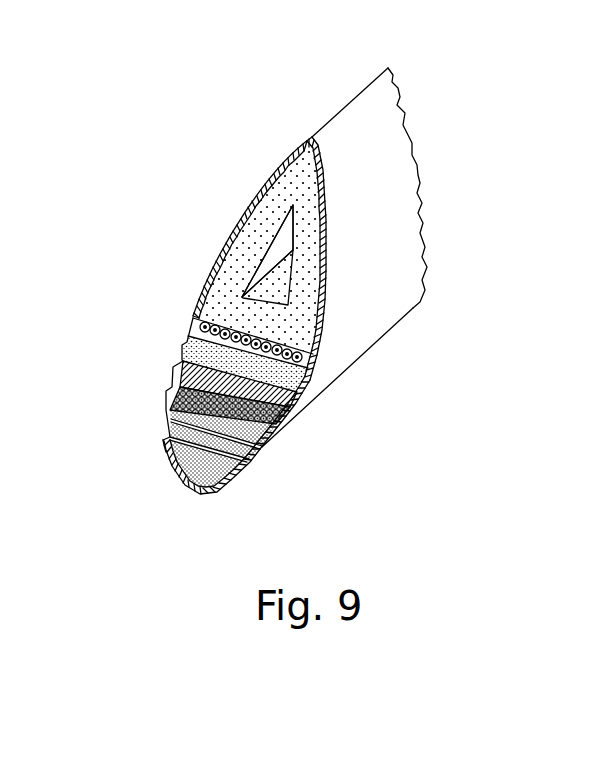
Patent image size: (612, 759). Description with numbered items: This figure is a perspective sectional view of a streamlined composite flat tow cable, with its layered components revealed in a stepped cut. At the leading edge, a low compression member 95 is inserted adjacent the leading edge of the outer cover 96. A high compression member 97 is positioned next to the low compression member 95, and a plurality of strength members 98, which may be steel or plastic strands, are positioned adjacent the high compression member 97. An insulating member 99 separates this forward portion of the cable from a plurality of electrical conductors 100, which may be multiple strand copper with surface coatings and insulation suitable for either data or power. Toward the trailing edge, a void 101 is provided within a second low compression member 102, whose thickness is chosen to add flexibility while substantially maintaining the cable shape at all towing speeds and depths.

The low compression member 95 is at (228, 476).
The outer cover 96 is at (165, 457).
The high compression member 97 is at (262, 450).
The strength members 98 is at (283, 417).
The insulating member 99 is at (310, 381).
The electrical conductors 100 is at (198, 322).
The void 101 is at (273, 250).
The second low compression member 102 is at (225, 283).